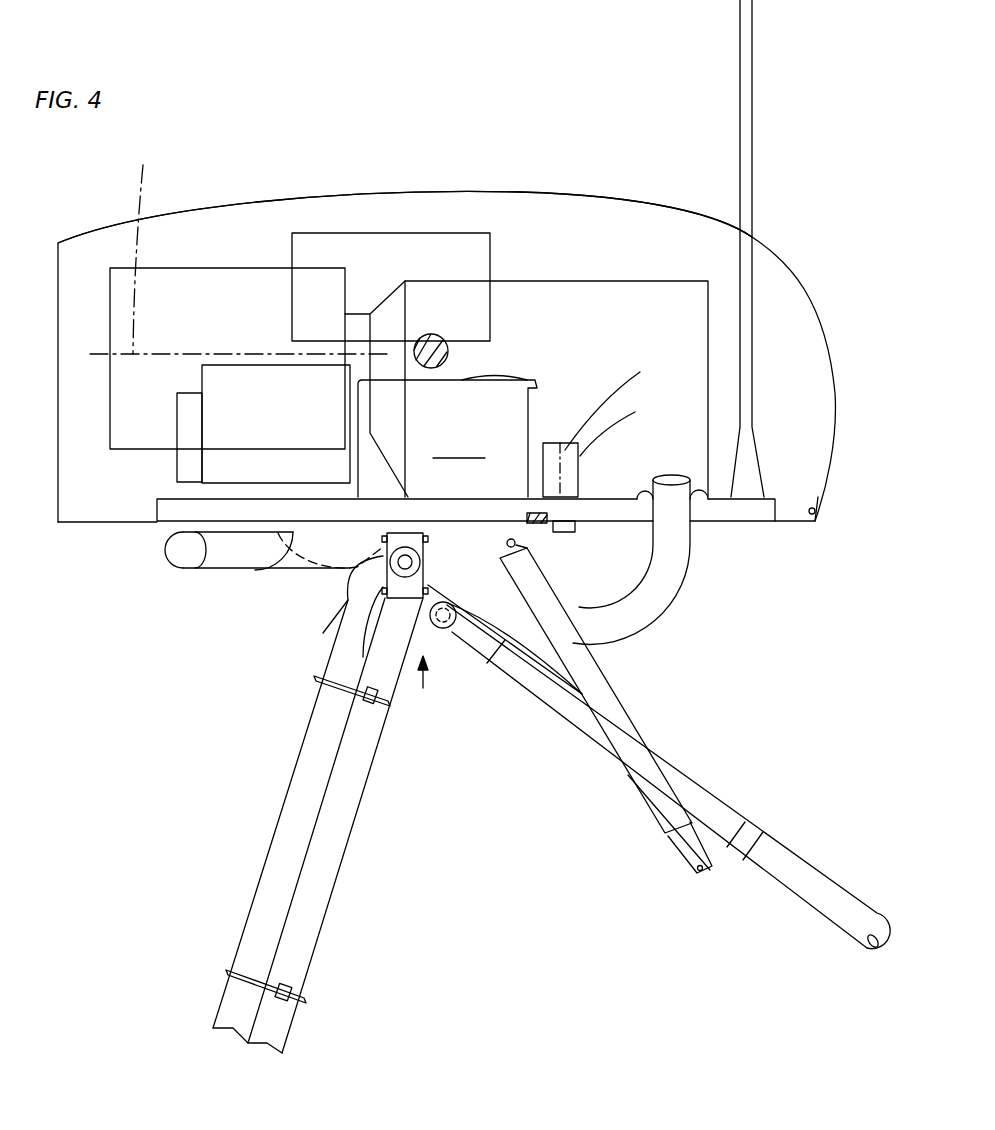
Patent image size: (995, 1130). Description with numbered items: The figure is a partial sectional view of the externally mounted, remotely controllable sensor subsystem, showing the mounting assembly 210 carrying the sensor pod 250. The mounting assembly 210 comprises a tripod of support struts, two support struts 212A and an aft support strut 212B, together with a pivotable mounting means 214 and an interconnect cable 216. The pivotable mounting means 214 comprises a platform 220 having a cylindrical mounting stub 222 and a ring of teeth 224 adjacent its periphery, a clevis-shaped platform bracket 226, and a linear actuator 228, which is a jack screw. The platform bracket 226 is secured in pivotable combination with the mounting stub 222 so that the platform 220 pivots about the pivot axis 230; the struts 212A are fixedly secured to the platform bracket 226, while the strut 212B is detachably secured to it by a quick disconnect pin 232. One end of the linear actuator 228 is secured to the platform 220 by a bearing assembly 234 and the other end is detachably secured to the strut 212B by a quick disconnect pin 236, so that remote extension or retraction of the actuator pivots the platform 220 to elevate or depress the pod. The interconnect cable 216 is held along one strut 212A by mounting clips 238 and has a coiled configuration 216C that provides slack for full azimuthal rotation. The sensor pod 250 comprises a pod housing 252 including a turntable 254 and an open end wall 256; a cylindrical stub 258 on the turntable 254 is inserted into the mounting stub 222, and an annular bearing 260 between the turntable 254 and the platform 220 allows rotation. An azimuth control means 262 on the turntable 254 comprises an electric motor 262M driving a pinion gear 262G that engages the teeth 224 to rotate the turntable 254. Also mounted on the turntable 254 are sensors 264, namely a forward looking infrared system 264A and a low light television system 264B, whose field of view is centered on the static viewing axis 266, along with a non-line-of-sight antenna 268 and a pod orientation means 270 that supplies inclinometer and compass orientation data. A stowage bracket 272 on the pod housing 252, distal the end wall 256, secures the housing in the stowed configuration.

The mounting assembly 210 is at (535, 833).
The support strut 212A is at (327, 848).
The support strut 212B is at (795, 867).
The pivotable mounting means 214 is at (435, 687).
The interconnect cable 216 is at (292, 810).
The coiled configuration of the cable 216C is at (165, 555).
The platform 220 is at (283, 533).
The cylindrical mounting stub 222 is at (383, 567).
The ring of teeth 224 is at (598, 527).
The platform bracket 226 is at (317, 633).
The linear actuator 228 is at (600, 690).
The pivot axis 230 is at (380, 587).
The quick disconnect pin 232 is at (448, 630).
The bearing assembly 234 is at (553, 533).
The quick disconnect pin 236 is at (701, 877).
The mounting clips 238 is at (357, 705).
The sensor pod 250 is at (388, 186).
The pod housing 252 is at (480, 190).
The turntable 254 is at (742, 507).
The open end wall 256 is at (60, 257).
The cylindrical stub 258 is at (300, 588).
The annular bearing 260 is at (632, 426).
The azimuth control means 262 is at (558, 430).
The electric motor 262M is at (637, 403).
The pinion gear 262G is at (548, 514).
The sensors 264 is at (203, 258).
The forward looking infrared (FLIR) system 264A is at (166, 267).
The low light television (LLTV) system 264B is at (238, 363).
The static viewing axis 266 is at (240, 245).
The non-line-of-sight (NLOS) antenna 268 is at (757, 38).
The pod orientation means 270 is at (526, 389).
The stowage bracket 272 is at (822, 500).